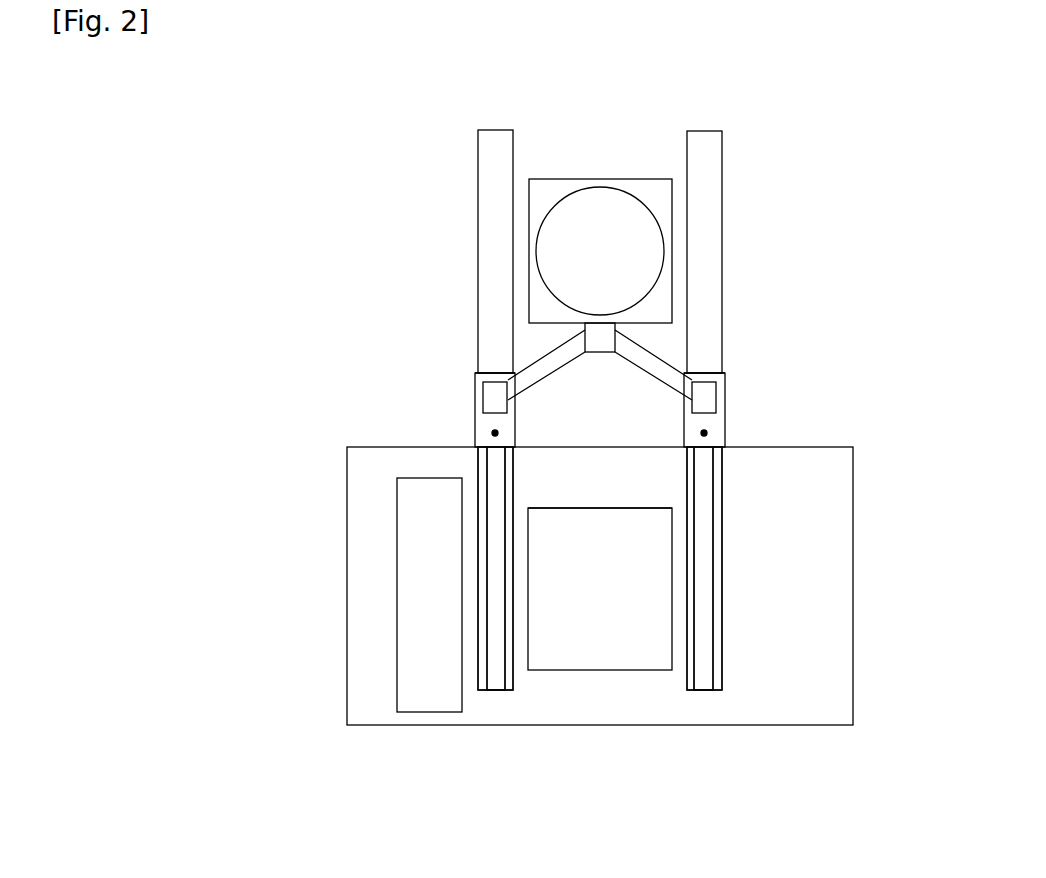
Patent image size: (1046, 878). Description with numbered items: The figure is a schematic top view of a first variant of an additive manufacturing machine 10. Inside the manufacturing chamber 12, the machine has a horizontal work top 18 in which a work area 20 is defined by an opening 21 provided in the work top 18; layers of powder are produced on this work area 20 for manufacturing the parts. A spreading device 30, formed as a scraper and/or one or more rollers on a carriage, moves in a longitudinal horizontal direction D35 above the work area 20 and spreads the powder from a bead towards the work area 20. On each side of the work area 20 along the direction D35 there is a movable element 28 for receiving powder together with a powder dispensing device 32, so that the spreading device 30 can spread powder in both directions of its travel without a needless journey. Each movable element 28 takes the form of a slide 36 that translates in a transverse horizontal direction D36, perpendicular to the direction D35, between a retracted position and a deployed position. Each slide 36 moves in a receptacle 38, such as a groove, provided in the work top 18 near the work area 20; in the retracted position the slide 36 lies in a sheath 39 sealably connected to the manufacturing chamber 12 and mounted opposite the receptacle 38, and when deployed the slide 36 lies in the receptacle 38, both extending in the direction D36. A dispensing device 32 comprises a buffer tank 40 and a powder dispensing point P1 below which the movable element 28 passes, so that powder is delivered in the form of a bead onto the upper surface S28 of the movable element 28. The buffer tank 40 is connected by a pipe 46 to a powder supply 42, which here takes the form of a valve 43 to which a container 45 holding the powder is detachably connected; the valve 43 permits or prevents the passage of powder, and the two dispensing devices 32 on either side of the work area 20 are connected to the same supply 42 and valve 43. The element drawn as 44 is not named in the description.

The additive manufacturing machine 10 is at (812, 185).
The manufacturing chamber 12 is at (853, 501).
The work top 18 is at (832, 659).
The work area 20 is at (614, 623).
The opening 21 is at (598, 508).
The movable element 28 is at (500, 485).
The upper surface of the movable element S28 is at (498, 675).
The spreading device 30 is at (443, 598).
The powder dispensing device 32 is at (474, 374).
The slide 36 is at (497, 680).
The receptacle 38 is at (478, 476).
The sheath 39 is at (478, 252).
The buffer tank 40 is at (483, 398).
The powder supply 42 is at (608, 202).
The valve 43 is at (595, 345).
The lower block 44 is at (474, 440).
The container 45 is at (587, 197).
The pipe 46 is at (545, 365).
The powder dispensing point P1 is at (495, 433).
The transverse horizontal direction D36 is at (427, 134).
The longitudinal horizontal direction D35 is at (259, 618).